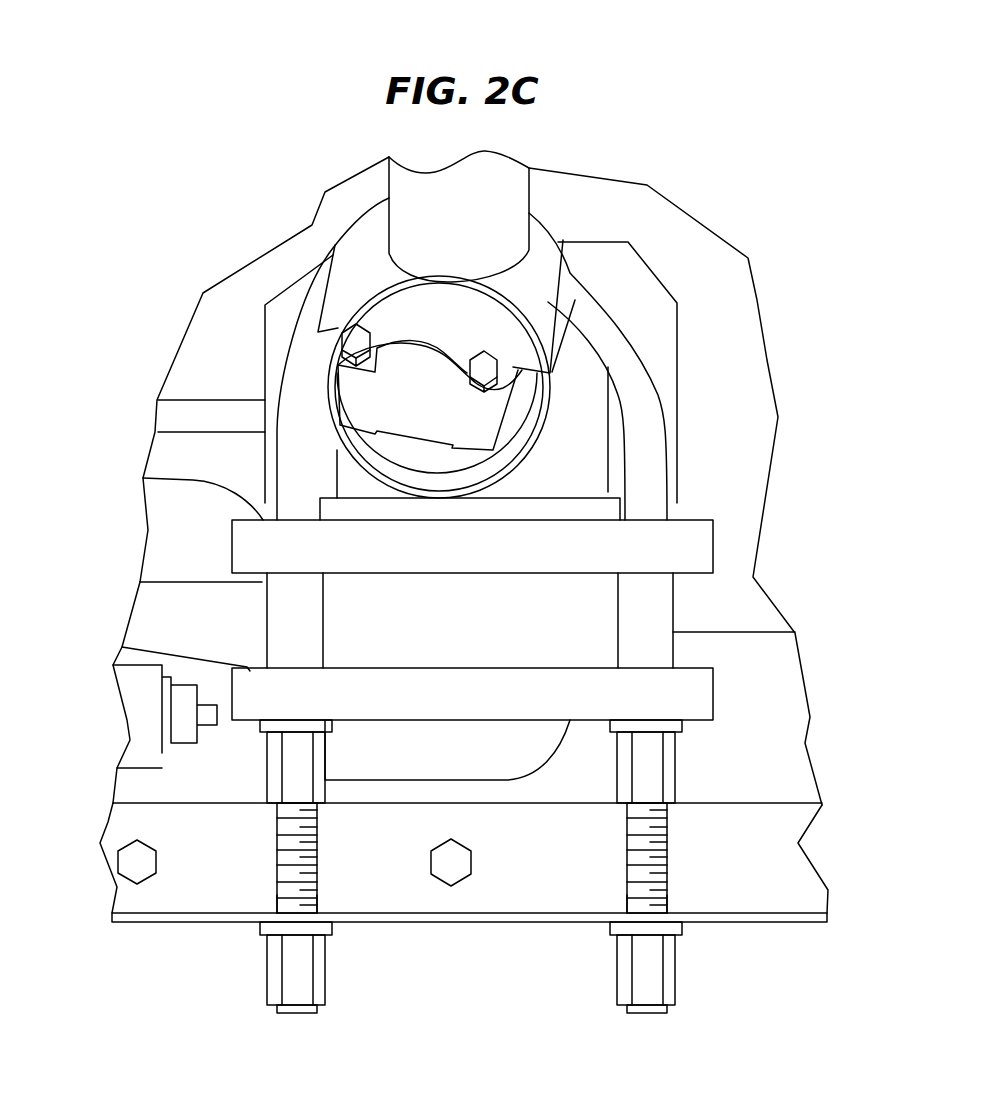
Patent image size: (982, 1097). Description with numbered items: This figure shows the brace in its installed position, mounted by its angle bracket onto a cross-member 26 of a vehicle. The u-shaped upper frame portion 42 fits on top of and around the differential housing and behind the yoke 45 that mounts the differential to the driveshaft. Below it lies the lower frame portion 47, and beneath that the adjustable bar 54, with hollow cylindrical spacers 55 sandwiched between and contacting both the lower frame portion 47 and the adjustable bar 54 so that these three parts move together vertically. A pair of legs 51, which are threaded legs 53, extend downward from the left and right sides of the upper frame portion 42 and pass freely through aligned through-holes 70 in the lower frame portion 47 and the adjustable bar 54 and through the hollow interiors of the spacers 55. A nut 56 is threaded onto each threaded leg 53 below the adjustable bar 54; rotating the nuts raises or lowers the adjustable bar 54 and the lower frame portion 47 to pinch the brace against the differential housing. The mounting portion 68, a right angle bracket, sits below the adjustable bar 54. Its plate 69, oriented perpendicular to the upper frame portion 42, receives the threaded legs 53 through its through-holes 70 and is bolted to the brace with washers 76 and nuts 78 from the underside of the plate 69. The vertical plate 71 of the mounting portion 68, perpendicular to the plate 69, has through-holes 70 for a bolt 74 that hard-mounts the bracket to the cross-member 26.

The cross-member 26 is at (787, 733).
The upper frame portion 42 is at (285, 360).
The yoke 45 is at (365, 405).
The lower frame portion 47 is at (703, 538).
The legs 51 is at (280, 898).
The threaded legs 53 is at (277, 852).
The adjustable bar 54 is at (700, 687).
The spacers 55 is at (673, 613).
The nut 56 is at (273, 778).
The mounting portion 68 is at (108, 822).
The plate 69 is at (117, 927).
The through-holes 70 is at (332, 927).
The vertical plate 71 is at (793, 863).
The bolt 74 is at (455, 872).
The washers 76 is at (610, 933).
The nuts 78 is at (265, 977).